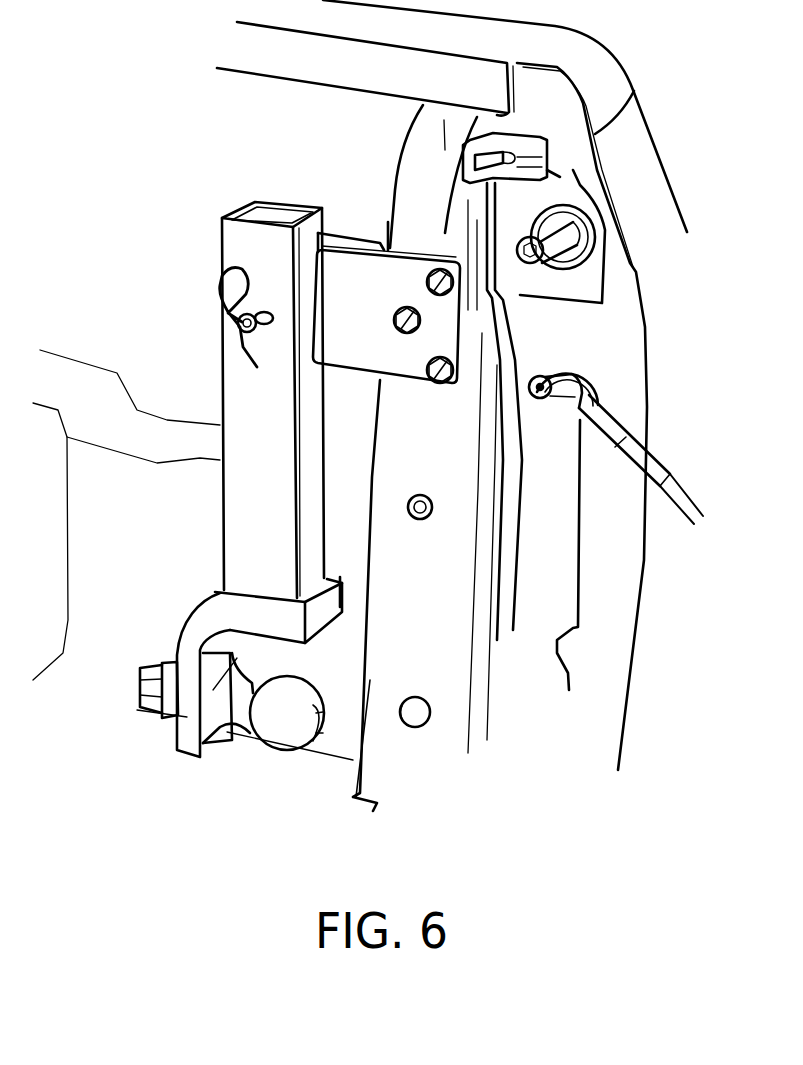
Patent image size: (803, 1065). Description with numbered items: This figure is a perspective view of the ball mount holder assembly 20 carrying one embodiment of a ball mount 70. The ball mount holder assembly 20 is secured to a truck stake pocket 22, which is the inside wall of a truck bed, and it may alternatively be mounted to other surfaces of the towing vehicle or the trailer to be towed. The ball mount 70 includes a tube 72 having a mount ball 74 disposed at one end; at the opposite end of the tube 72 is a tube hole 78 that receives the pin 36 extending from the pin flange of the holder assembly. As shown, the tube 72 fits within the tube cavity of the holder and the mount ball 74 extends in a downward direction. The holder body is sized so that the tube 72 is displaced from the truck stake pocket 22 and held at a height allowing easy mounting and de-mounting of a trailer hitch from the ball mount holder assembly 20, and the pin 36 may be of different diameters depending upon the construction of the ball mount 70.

The ball mount holder assembly 20 is at (418, 232).
The truck stake pocket 22 is at (426, 619).
The pin 36 is at (238, 322).
The ball mount 70 is at (203, 350).
The tube 72 is at (225, 320).
The mount ball 74 is at (265, 730).
The tube hole 78 is at (283, 230).